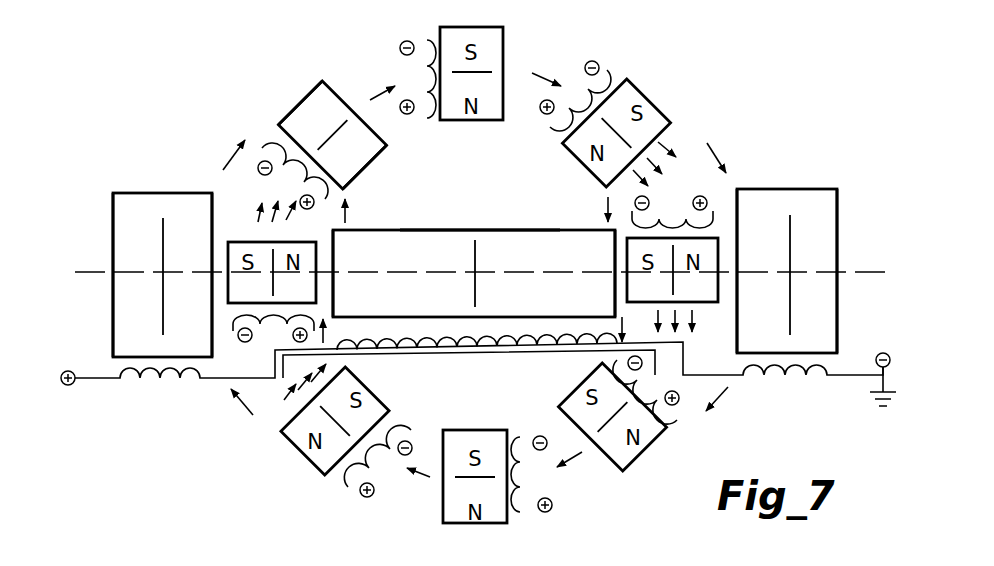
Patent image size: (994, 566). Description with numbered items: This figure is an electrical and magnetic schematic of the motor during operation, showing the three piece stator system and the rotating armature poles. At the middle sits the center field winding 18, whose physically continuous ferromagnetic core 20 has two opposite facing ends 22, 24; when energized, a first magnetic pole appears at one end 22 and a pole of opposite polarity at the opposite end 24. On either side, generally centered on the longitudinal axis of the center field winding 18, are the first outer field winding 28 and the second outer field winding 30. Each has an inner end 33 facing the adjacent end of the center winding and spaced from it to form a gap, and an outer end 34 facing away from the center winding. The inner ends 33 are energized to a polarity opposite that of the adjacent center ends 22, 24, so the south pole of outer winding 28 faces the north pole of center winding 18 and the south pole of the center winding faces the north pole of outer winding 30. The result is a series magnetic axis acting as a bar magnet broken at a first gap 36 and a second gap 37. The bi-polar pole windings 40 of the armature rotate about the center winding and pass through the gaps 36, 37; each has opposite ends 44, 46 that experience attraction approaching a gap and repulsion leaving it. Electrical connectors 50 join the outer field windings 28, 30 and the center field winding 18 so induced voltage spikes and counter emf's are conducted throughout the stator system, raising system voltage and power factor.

The center field winding 18 is at (556, 226).
The ferromagnetic core 20 is at (507, 229).
The end of center field winding 22 is at (334, 256).
The opposite end of center field winding 24 is at (614, 292).
The first outer field winding 28 is at (140, 191).
The second outer field winding 30 is at (798, 186).
The inner end 33 is at (214, 208).
The outer end 34 is at (112, 213).
The first gap 36 is at (265, 339).
The second gap 37 is at (718, 320).
The bi-polar pole winding 40 is at (344, 90).
The end of pole winding 44 is at (372, 153).
The opposite end of pole winding 46 is at (304, 101).
The electrical connectors 50 is at (107, 380).